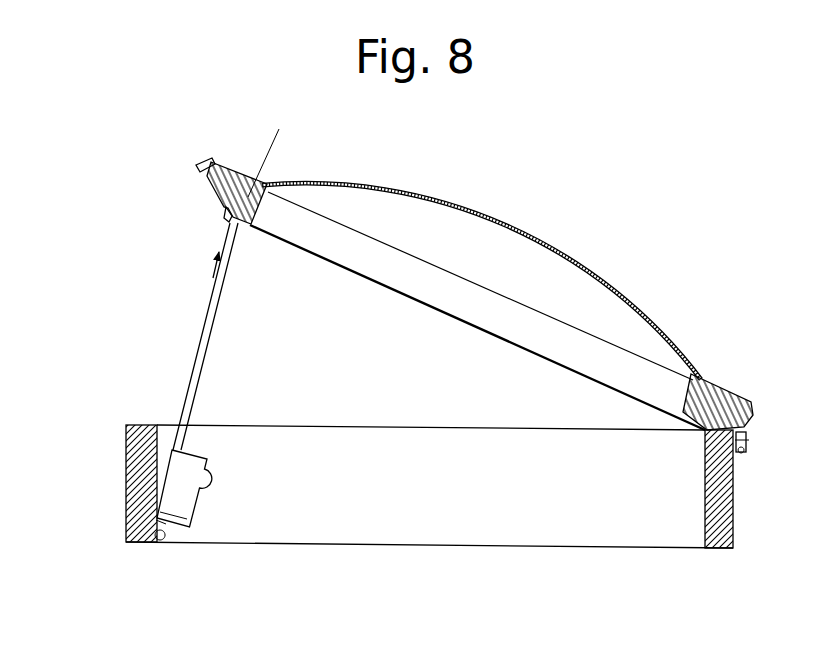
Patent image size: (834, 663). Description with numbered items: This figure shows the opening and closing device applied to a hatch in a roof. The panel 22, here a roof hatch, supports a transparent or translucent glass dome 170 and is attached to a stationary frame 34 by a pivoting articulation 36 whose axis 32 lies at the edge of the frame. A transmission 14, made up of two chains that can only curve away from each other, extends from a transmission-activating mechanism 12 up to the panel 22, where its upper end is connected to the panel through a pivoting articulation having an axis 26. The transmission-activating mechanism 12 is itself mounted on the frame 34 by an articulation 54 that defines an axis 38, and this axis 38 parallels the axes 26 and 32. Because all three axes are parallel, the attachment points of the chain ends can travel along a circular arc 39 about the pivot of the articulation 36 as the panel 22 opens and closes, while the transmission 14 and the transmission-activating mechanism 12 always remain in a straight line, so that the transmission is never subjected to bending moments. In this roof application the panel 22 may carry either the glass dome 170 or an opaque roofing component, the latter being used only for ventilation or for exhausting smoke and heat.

The transmission-activating mechanism 12 is at (214, 454).
The transmission 14 is at (204, 307).
The panel 22 is at (208, 180).
The axis 26 is at (226, 221).
The axis 32 is at (748, 442).
The stationary frame 34 is at (142, 431).
The pivoting articulation 36 is at (756, 424).
The axis 38 is at (126, 498).
The circular arc 39 is at (263, 143).
The articulation 54 is at (166, 533).
The glass dome 170 is at (502, 222).